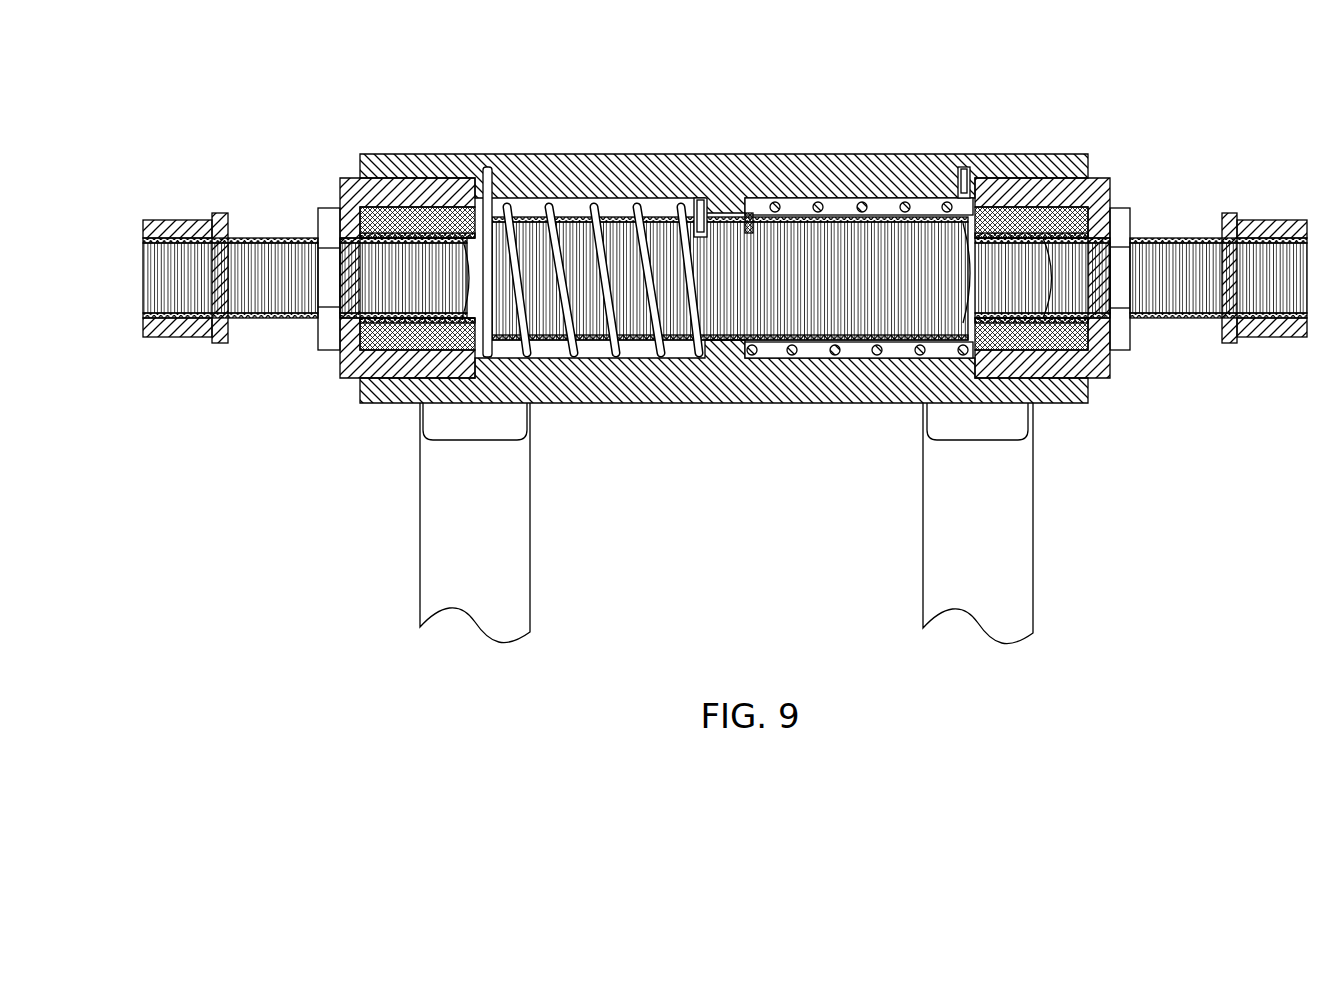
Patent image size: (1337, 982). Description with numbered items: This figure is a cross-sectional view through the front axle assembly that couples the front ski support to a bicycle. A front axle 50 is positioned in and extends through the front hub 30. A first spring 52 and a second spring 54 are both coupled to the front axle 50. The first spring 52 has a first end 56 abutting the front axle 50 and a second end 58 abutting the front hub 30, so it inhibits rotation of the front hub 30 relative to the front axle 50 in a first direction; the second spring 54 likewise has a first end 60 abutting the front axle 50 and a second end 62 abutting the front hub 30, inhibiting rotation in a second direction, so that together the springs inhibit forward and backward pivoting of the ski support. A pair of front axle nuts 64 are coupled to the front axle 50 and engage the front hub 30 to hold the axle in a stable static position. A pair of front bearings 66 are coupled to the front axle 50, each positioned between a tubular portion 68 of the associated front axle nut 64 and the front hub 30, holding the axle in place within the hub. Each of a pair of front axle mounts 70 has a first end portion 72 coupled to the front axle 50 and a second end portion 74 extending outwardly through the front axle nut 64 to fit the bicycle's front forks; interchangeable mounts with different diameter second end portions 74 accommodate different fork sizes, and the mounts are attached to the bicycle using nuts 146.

The front hub 30 is at (695, 395).
The front axle 50 is at (757, 322).
The first spring 52 is at (571, 358).
The second spring 54 is at (874, 352).
The first end 56 is at (483, 197).
The second end 58 is at (698, 200).
The first end 60 is at (963, 167).
The second end 62 is at (748, 228).
The front axle nut 64 is at (355, 372).
The front bearing 66 is at (390, 365).
The tubular portion 68 is at (435, 325).
The front axle mount 70 is at (330, 352).
The first end portion 72 is at (352, 250).
The second end portion 74 is at (258, 318).
The nut 146 is at (167, 337).